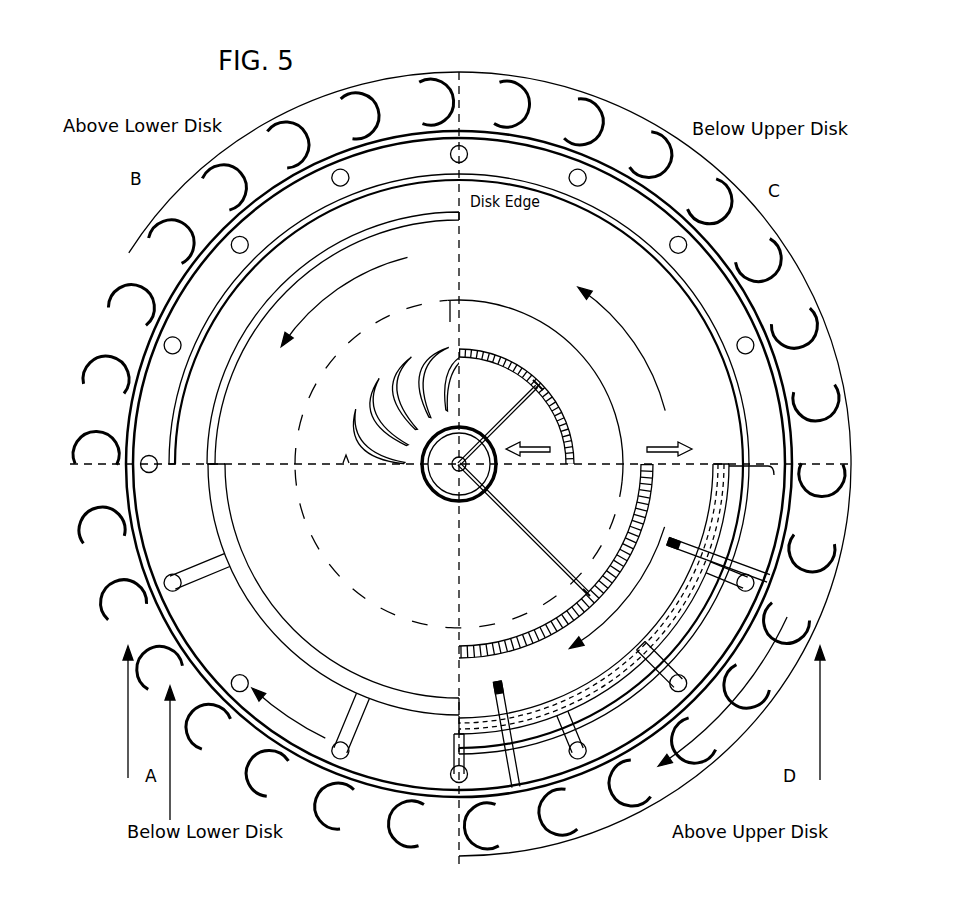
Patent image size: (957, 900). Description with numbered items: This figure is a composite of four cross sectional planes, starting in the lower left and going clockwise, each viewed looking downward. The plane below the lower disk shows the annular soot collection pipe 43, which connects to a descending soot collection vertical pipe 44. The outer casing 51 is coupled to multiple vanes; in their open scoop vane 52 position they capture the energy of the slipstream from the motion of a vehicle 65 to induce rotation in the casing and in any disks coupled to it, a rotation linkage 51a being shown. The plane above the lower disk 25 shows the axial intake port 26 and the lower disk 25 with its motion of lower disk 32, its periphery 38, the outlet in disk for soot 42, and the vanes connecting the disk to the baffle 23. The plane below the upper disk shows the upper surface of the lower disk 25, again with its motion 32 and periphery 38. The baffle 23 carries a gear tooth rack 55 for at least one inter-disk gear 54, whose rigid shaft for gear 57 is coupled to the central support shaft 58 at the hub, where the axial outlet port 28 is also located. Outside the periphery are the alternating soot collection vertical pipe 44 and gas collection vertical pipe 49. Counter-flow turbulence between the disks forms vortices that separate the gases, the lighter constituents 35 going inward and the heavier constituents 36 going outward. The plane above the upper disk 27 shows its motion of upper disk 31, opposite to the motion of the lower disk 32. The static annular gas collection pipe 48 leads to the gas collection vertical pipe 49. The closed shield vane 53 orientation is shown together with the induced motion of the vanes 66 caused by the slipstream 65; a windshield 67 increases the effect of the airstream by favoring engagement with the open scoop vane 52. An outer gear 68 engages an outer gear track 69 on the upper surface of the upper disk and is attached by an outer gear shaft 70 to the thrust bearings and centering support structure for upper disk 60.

The baffle 23 is at (505, 323).
The lower disk 25 is at (409, 288).
The axial intake port 26 is at (373, 390).
The upper disk 27 is at (488, 561).
The axial outlet port 28 is at (467, 475).
The motion of upper disk 31 is at (635, 590).
The motion of lower disk 32 is at (327, 300).
The lighter constituents 35 is at (545, 442).
The heavier constituents 36 is at (660, 442).
The periphery 38 is at (300, 233).
The outlet in disk for soot 42 is at (228, 385).
The annular soot collection pipe 43 is at (350, 673).
The soot collection vertical pipe 44 is at (572, 175).
The static annular gas collection pipe 48 is at (707, 500).
The gas collection vertical pipe 49 is at (668, 240).
The outer casing 51 is at (143, 540).
The rotation linkage 51a is at (510, 700).
The open scoop vane 52 is at (123, 590).
The closed shield vane 53 is at (822, 487).
The inter-disk gear 54 is at (538, 385).
The gear tooth rack on the baffle 55 is at (560, 407).
The rigid shaft for gear 57 is at (508, 410).
The central support shaft 58 is at (462, 457).
The thrust bearings and centering support structure for upper disk 60 is at (493, 482).
The slipstream from the motion of a vehicle 65 is at (125, 717).
The induced motion of the vanes 66 is at (277, 707).
The windshield 67 is at (768, 712).
The outer gear 68 is at (567, 593).
The outer gear track 69 is at (528, 648).
The outer gear shaft 70 is at (550, 547).